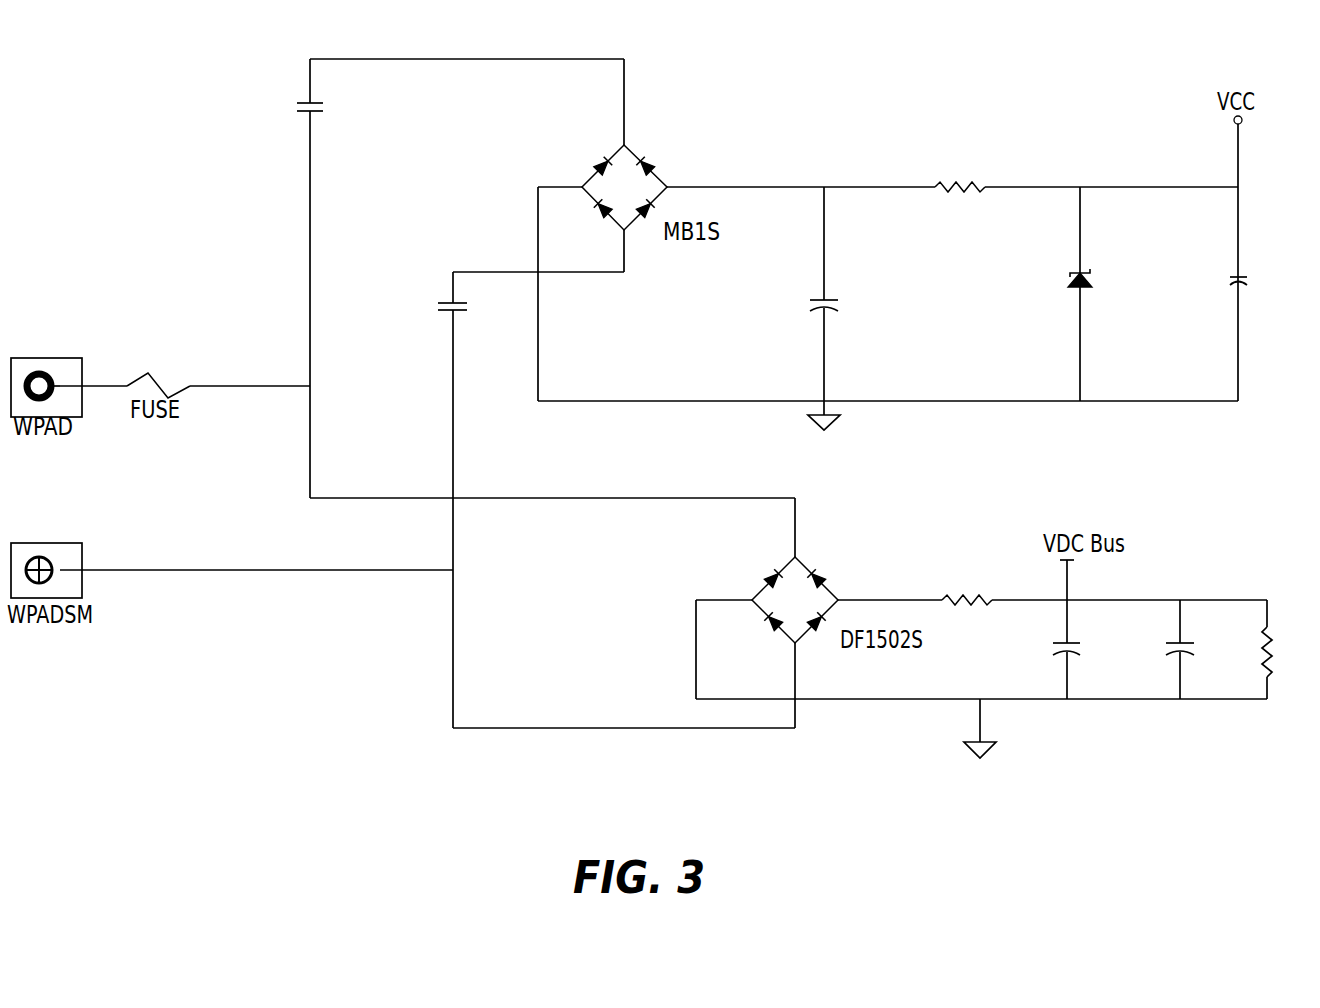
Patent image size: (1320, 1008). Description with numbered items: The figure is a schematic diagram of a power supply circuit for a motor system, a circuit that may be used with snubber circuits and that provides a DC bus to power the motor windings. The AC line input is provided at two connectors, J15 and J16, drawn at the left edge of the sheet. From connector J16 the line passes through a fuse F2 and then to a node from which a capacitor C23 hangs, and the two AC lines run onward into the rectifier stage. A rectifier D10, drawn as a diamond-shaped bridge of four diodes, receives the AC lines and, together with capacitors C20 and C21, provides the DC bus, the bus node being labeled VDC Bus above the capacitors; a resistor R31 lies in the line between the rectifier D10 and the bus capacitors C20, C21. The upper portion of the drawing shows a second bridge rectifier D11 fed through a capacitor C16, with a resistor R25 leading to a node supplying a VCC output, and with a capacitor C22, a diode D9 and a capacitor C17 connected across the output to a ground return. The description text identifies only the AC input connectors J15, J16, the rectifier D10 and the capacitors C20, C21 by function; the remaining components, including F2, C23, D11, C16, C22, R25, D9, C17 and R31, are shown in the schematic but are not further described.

The AC line input connector J16 is at (46, 373).
The fuse F2 is at (158, 370).
The capacitor C23 is at (334, 106).
The bridge rectifier D11 (MB1S) D11 is at (626, 188).
The capacitor C16 is at (477, 308).
The capacitor C22 is at (853, 294).
The resistor R25 is at (957, 171).
The zener diode D9 is at (1104, 294).
The capacitor C17 is at (1265, 279).
The AC line input connector J15 is at (46, 554).
The rectifier D10 is at (793, 602).
The resistor R31 is at (961, 583).
The capacitor C20 is at (1091, 645).
The capacitor C21 is at (1203, 649).